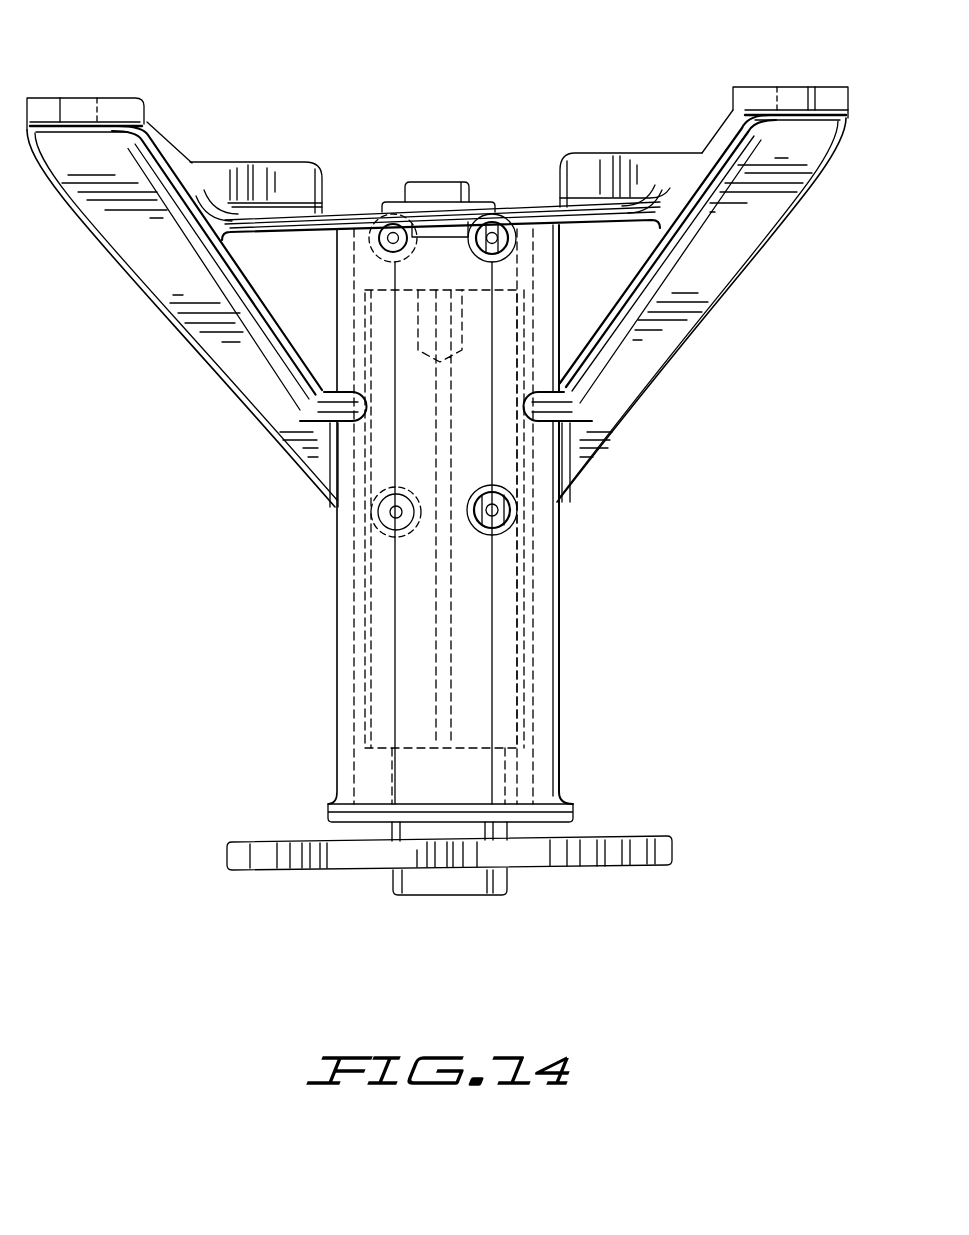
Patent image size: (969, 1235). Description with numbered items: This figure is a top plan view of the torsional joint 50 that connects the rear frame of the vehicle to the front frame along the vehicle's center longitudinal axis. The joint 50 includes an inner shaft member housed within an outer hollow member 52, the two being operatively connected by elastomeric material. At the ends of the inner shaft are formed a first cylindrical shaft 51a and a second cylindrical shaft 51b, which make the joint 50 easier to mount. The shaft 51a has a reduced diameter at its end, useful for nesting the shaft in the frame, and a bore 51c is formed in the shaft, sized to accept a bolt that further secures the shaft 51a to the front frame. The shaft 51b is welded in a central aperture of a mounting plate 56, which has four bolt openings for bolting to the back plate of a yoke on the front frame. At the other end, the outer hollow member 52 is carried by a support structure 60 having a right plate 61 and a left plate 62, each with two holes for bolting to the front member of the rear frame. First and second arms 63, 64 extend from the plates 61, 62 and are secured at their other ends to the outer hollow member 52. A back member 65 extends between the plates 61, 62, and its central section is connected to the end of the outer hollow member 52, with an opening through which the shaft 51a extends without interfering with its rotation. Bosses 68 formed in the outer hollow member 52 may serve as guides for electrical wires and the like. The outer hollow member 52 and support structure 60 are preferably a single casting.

The torsional joint 50 is at (337, 562).
The first cylindrical shaft 51a is at (486, 124).
The second cylindrical shaft 51b is at (493, 895).
The bore 51c is at (423, 273).
The outer hollow member 52 is at (368, 648).
The mounting plate 56 is at (325, 870).
The support structure 60 is at (698, 334).
The right plate 61 is at (110, 97).
The left plate 62 is at (763, 87).
The first arm 63 is at (157, 270).
The second arm 64 is at (737, 255).
The back member 65 is at (292, 161).
The bosses 68 is at (514, 240).